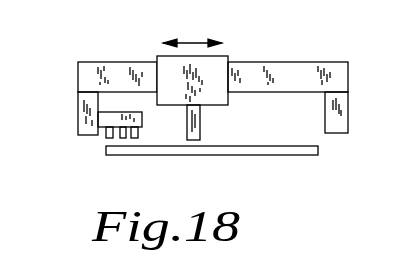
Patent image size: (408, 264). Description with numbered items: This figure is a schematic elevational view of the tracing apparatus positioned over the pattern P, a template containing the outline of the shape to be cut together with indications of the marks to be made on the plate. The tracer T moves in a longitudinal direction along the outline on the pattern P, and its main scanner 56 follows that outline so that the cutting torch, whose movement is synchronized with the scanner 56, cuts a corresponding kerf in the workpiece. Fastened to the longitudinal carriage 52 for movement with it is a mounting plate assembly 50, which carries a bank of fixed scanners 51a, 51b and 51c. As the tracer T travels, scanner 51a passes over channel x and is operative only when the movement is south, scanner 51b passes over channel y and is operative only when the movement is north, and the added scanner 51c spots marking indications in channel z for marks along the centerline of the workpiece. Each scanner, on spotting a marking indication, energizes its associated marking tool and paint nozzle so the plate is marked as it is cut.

The mounting plate assembly 50 is at (107, 118).
The fixed scanner 51a is at (108, 137).
The fixed scanner 51b is at (121, 140).
The fixed scanner 51c is at (145, 144).
The longitudinal carriage 52 is at (297, 73).
The main scanner 56 is at (200, 123).
The pattern P is at (263, 152).
The tracer T is at (225, 50).